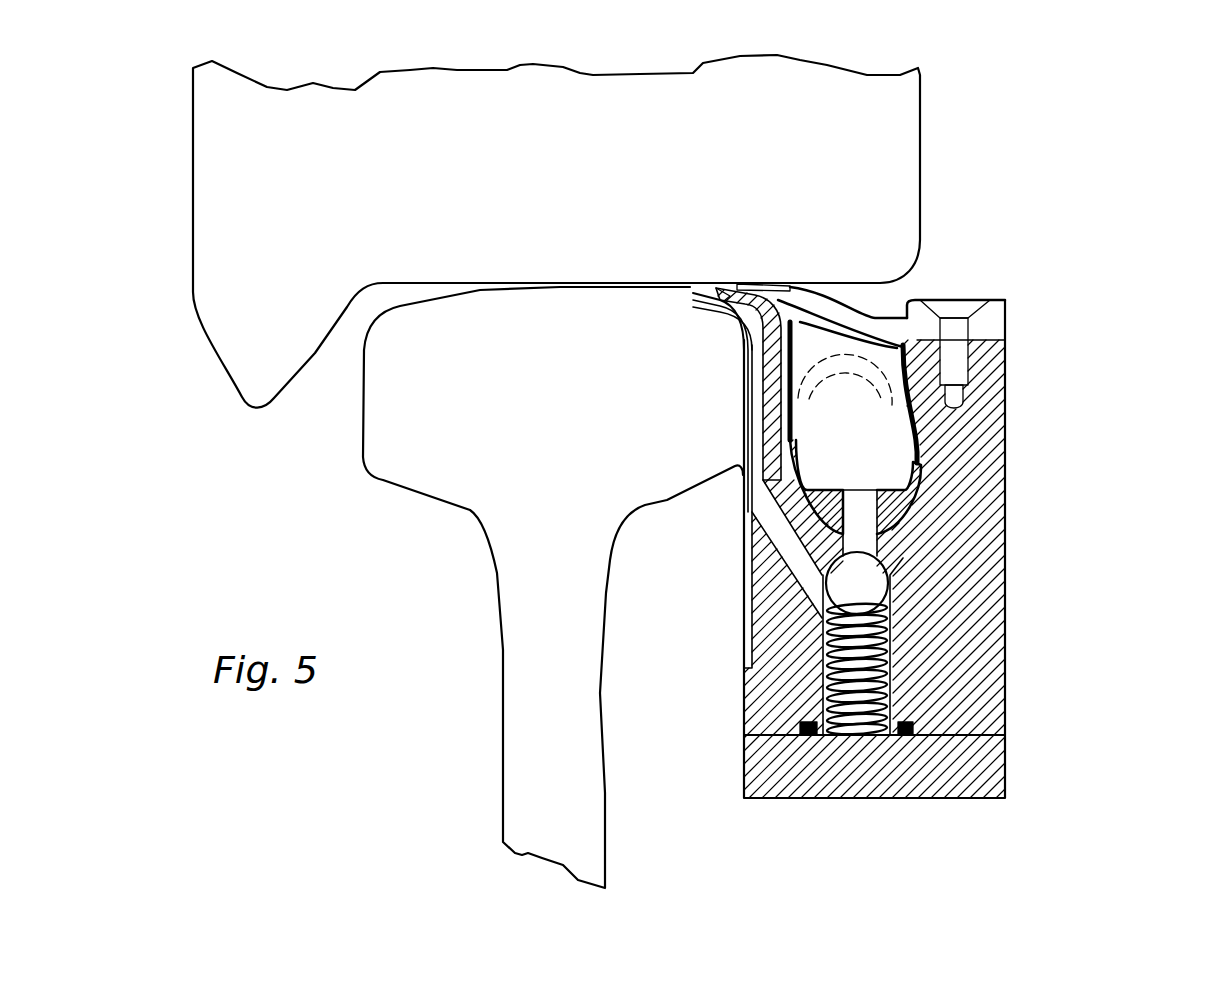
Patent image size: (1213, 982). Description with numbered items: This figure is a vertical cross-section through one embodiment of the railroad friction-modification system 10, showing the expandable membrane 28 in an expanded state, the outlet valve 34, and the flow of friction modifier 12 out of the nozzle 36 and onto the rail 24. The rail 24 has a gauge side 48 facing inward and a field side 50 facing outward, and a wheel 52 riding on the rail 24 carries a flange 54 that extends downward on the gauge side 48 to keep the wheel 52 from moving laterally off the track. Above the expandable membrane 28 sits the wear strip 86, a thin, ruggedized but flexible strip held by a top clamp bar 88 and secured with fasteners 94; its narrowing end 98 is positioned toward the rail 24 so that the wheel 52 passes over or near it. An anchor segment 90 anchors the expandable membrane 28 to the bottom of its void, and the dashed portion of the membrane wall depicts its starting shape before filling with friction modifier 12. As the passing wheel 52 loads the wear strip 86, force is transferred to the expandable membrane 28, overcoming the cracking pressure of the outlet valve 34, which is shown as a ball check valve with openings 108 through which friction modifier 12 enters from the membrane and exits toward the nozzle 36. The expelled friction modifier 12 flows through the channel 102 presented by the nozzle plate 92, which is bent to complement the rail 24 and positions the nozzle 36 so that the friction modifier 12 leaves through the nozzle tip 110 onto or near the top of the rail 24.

The railroad friction-modification system 10 is at (1103, 246).
The friction modifier 12 is at (877, 462).
The rail 24 is at (520, 572).
The expandable membrane 28 is at (903, 355).
The outlet valve 34 is at (885, 657).
The nozzle 36 is at (692, 285).
The gauge side 48 is at (318, 427).
The field side 50 is at (722, 505).
The wheel 52 is at (305, 118).
The flange 54 is at (253, 367).
The wear strip 86 is at (997, 327).
The top clamp bar 88 is at (997, 313).
The anchor segment 90 is at (903, 510).
The nozzle plate 92 is at (747, 632).
The fasteners 94 is at (954, 330).
The narrowing end 98 is at (787, 293).
The channel 102 is at (793, 337).
The openings 108 is at (862, 545).
The nozzle tip 110 is at (712, 293).